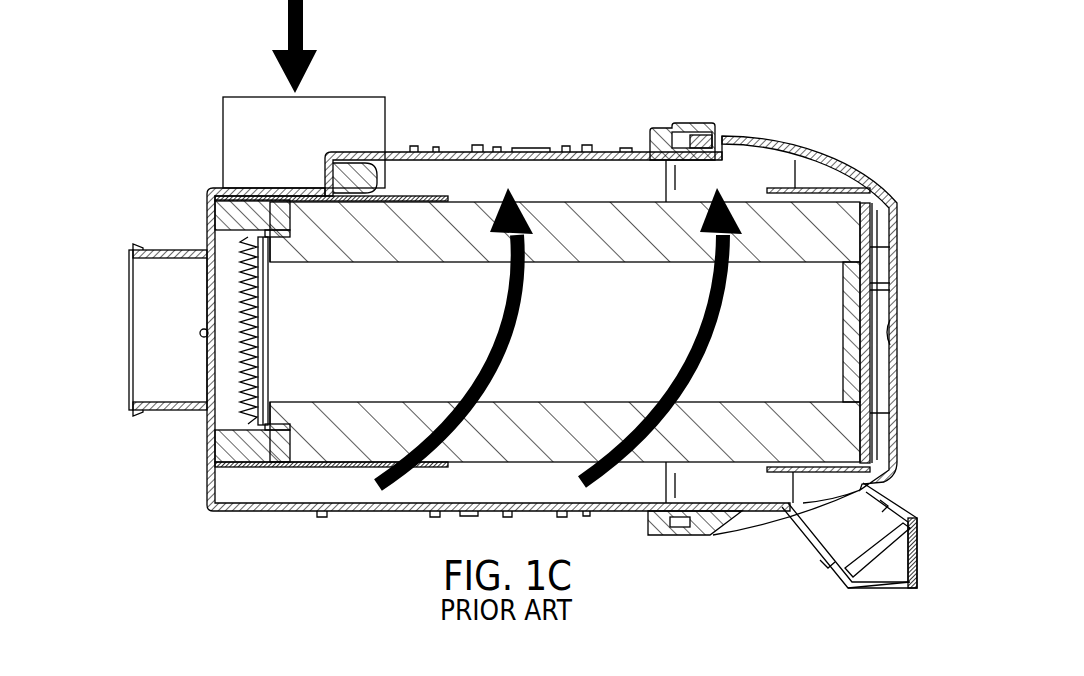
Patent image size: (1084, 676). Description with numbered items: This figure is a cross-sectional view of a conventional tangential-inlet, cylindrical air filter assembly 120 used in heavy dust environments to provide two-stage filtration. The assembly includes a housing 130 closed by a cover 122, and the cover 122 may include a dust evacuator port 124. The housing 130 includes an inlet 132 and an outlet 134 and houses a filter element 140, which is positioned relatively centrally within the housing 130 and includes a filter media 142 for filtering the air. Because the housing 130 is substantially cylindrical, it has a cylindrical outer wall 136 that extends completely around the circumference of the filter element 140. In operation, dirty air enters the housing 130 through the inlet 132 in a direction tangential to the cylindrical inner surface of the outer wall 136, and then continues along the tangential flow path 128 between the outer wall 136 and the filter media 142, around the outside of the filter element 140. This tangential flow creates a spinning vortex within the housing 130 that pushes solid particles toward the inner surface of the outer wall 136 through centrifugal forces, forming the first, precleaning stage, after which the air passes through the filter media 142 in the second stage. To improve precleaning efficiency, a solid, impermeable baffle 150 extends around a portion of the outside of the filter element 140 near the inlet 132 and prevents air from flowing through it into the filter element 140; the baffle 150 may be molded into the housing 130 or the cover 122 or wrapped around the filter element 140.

The air filter assembly 120 is at (893, 128).
The cover 122 is at (818, 149).
The dust evacuator port 124 is at (797, 530).
The tangential flow path 128 is at (718, 326).
The housing 130 is at (287, 508).
The inlet 132 is at (365, 97).
The outlet 134 is at (122, 372).
The outer wall 136 is at (345, 513).
The filter element 140 is at (608, 198).
The filter media 142 is at (822, 432).
The baffle 150 is at (435, 196).